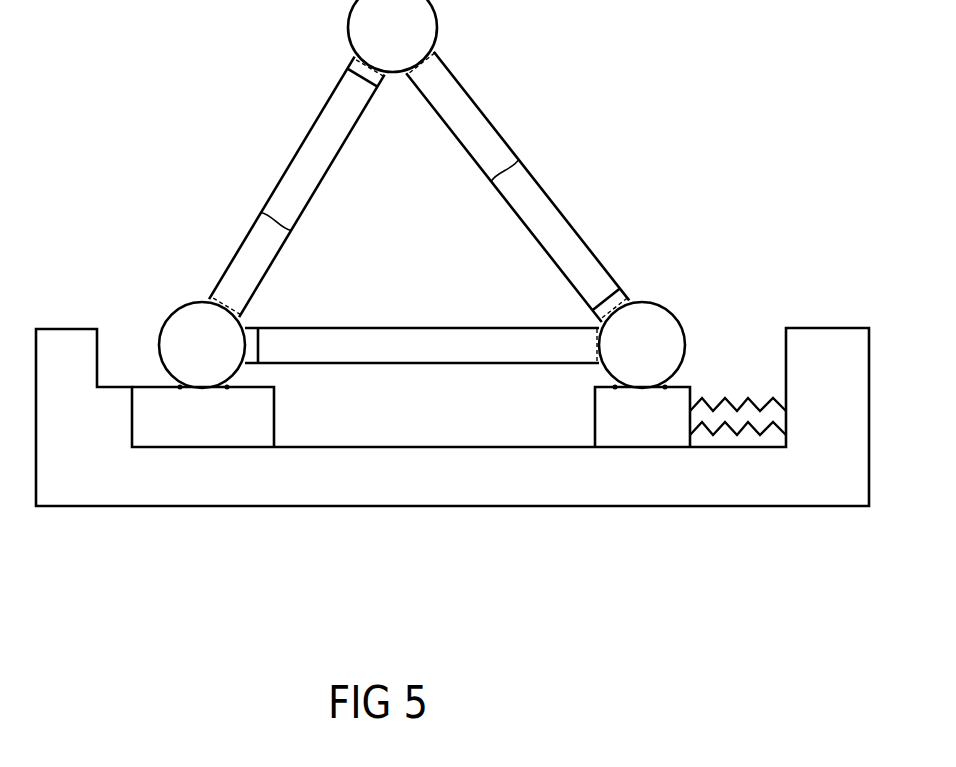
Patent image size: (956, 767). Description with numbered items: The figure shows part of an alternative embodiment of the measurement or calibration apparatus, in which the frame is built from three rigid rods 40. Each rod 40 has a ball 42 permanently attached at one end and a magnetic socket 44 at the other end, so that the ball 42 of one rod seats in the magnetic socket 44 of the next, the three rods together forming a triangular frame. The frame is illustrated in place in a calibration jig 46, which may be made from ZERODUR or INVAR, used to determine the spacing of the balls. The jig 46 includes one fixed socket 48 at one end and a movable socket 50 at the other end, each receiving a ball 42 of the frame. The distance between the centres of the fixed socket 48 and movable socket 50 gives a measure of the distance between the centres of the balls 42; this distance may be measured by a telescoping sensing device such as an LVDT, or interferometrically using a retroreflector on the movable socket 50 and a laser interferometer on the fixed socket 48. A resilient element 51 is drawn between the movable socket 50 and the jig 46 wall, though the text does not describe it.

The rigid rod 40 is at (250, 248).
The ball 42 is at (433, 25).
The magnetic socket 44 is at (348, 62).
The calibration jig 46 is at (413, 490).
The fixed socket 48 is at (162, 422).
The movable socket 50 is at (673, 433).
The spring 51 is at (735, 415).